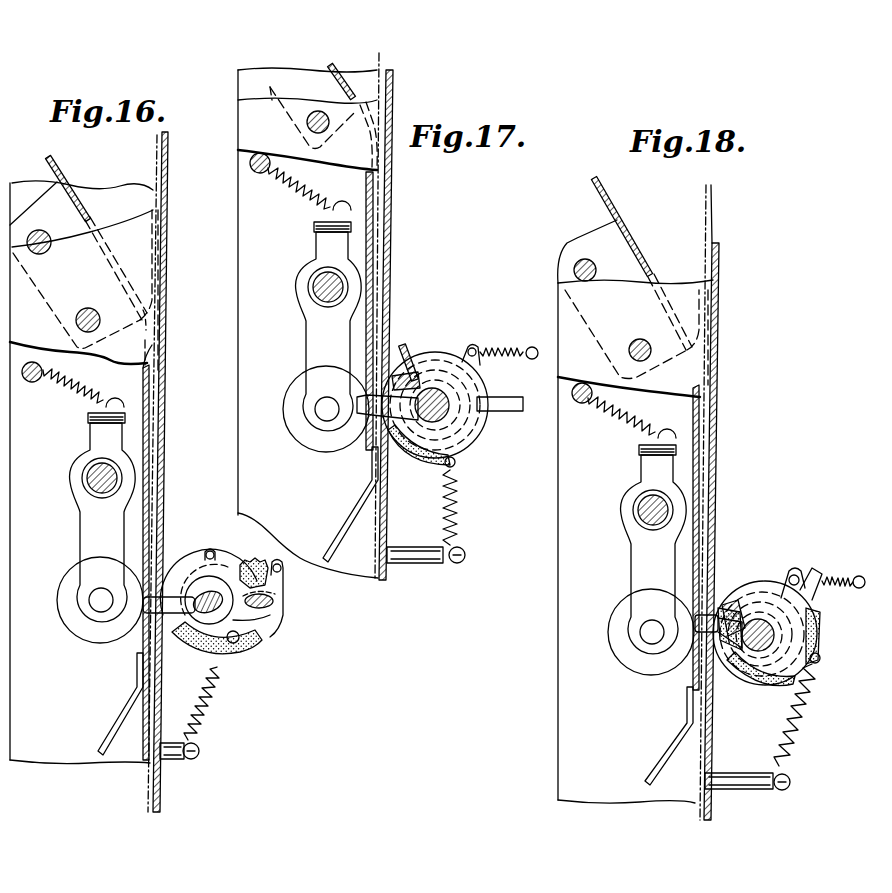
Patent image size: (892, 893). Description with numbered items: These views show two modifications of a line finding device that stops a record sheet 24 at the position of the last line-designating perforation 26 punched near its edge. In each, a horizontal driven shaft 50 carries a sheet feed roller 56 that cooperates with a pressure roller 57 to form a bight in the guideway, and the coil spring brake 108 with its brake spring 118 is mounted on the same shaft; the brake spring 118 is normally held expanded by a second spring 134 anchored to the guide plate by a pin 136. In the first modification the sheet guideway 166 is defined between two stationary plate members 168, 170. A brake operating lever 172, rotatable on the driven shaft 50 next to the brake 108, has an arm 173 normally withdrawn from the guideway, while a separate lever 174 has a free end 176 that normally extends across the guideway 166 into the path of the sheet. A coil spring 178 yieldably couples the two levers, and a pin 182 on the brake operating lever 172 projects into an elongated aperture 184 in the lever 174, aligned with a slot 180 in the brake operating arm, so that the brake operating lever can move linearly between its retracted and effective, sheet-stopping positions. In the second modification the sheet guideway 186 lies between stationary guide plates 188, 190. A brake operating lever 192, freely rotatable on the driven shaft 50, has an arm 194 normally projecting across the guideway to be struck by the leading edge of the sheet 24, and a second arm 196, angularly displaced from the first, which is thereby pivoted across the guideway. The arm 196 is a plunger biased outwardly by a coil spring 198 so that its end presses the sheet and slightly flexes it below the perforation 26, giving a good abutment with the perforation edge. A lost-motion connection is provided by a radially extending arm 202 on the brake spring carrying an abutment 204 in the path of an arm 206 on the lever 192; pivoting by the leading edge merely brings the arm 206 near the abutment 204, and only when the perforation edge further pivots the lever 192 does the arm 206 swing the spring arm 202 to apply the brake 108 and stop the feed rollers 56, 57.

In FIG. 16, the record sheet 24 is at (153, 155).
In FIG. 17, the record sheet 24 is at (395, 62).
In FIG. 18, the record sheet 24 is at (714, 207).
In FIG. 16, the slit-like perforations 26 is at (143, 592).
In FIG. 17, the slit-like perforations 26 is at (329, 326).
In FIG. 18, the slit-like perforations 26 is at (656, 549).
In FIG. 16, the driven shaft 50 is at (197, 647).
In FIG. 17, the driven shaft 50 is at (435, 425).
In FIG. 18, the driven shaft 50 is at (790, 640).
In FIG. 16, the sheet feed rollers 56 is at (243, 653).
In FIG. 17, the sheet feed rollers 56 is at (463, 462).
In FIG. 18, the sheet feed rollers 56 is at (800, 713).
In FIG. 16, the pressure rollers 57 is at (62, 620).
In FIG. 17, the pressure rollers 57 is at (297, 423).
In FIG. 18, the pressure rollers 57 is at (650, 668).
In FIG. 16, the brake 108 is at (247, 562).
In FIG. 17, the brake spring 118 is at (470, 460).
In FIG. 18, the brake spring 118 is at (812, 615).
In FIG. 16, the second spring 134 is at (200, 720).
In FIG. 16, the pin 136 is at (168, 760).
In FIG. 17, the pin 136 is at (427, 563).
In FIG. 18, the pin 136 is at (727, 790).
In FIG. 16, the sheet guideway 166 is at (143, 310).
In FIG. 16, the stationary plate member 168 is at (160, 375).
In FIG. 16, the stationary plate member 170 is at (143, 405).
In FIG. 16, the brake operating lever 172 is at (282, 623).
In FIG. 16, the arm 173 is at (147, 607).
In FIG. 16, the separate lever 174 is at (185, 585).
In FIG. 16, the free end of lever 176 is at (147, 657).
In FIG. 16, the coil spring 178 is at (283, 578).
In FIG. 16, the elongated aperture 180 is at (193, 557).
In FIG. 16, the pin 182 is at (282, 608).
In FIG. 16, the aperture 184 is at (252, 610).
In FIG. 17, the sheet guideway 186 is at (375, 448).
In FIG. 18, the sheet guideway 186 is at (697, 337).
In FIG. 17, the stationary guide plate 188 is at (393, 200).
In FIG. 18, the stationary guide plate 188 is at (720, 267).
In FIG. 17, the stationary guide plate 190 is at (367, 205).
In FIG. 18, the stationary guide plate 190 is at (693, 425).
In FIG. 17, the brake operating lever 192 is at (407, 462).
In FIG. 18, the brake operating lever 192 is at (742, 685).
In FIG. 17, the arm 194 is at (355, 440).
In FIG. 18, the arm 194 is at (717, 693).
In FIG. 17, the second arm 196 is at (403, 347).
In FIG. 18, the second arm 196 is at (692, 618).
In FIG. 17, the coil spring 198 is at (427, 373).
In FIG. 18, the coil spring 198 is at (737, 607).
In FIG. 17, the radially extending arm 202 is at (483, 363).
In FIG. 18, the radially extending arm 202 is at (787, 578).
In FIG. 17, the abutment 204 is at (470, 347).
In FIG. 18, the abutment 204 is at (800, 577).
In FIG. 17, the arm 206 is at (513, 413).
In FIG. 18, the arm 206 is at (815, 585).